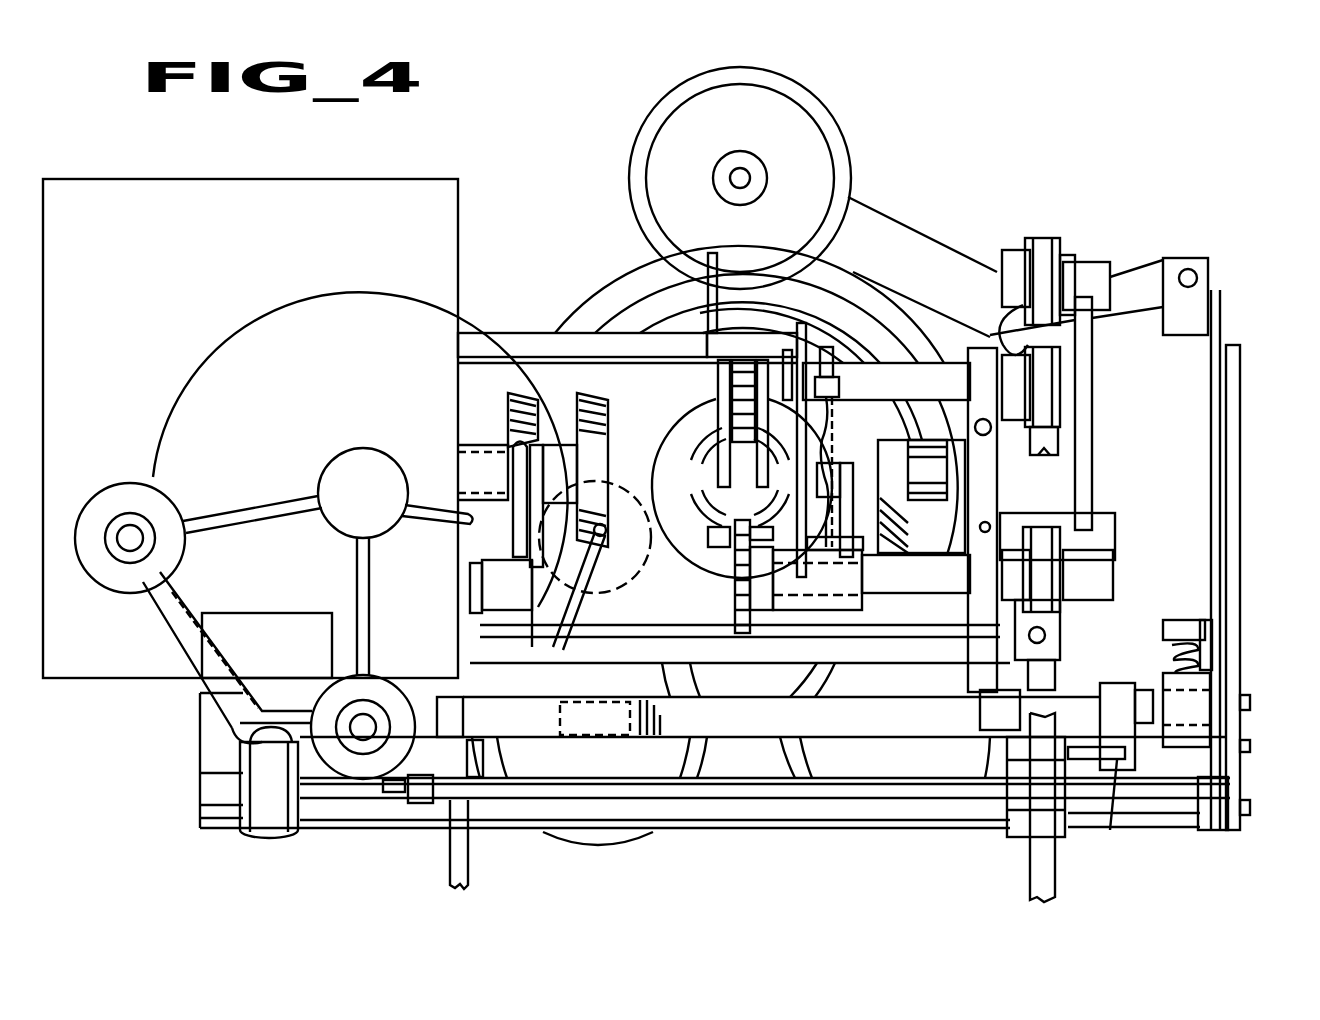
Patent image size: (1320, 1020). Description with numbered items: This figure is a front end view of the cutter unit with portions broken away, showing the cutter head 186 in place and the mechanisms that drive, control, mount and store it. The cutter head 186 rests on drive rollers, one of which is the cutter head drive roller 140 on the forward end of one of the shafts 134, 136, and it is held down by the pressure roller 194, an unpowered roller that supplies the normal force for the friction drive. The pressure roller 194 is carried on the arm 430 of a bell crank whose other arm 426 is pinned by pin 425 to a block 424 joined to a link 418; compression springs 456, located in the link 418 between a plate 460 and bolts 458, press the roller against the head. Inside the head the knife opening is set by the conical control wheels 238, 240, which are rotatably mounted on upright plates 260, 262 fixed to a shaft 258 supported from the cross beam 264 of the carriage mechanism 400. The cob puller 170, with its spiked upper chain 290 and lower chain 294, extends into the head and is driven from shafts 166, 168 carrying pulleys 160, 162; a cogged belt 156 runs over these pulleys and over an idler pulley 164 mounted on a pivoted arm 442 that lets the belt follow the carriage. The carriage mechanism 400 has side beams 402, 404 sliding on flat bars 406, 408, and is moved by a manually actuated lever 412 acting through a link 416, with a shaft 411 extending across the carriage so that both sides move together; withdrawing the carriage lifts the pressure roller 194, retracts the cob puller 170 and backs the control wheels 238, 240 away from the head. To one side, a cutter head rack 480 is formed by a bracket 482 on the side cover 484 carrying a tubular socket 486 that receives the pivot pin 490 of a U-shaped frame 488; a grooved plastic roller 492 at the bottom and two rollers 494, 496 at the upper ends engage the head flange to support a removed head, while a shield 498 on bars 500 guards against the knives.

The shaft 134 is at (587, 741).
The shaft 136 is at (897, 736).
The cutter head drive roller 140 is at (897, 838).
The cogged belt 156 is at (1058, 440).
The pulley 160 is at (1050, 588).
The pulley 162 is at (1063, 372).
The idler pulley 164 is at (1070, 215).
The shaft 166 is at (942, 590).
The shaft 168 is at (962, 398).
The cob puller 170 is at (848, 352).
The cutter head 186 is at (318, 297).
The pressure roller 194 is at (803, 97).
The conical control wheel 238 is at (607, 396).
The conical control wheel 240 is at (905, 480).
The shaft 258 is at (710, 657).
The upright plate 260 is at (555, 692).
The upright plate 262 is at (810, 692).
The cross beam 264 is at (780, 733).
The upper chain 290 is at (702, 415).
The lower chain 294 is at (762, 632).
The carriage mechanism 400 is at (1068, 688).
The side beam 402 is at (400, 793).
The side beam 404 is at (1120, 750).
The flat bar 406 is at (425, 805).
The flat bar 408 is at (1113, 800).
The shaft 411 is at (678, 830).
The manually actuated lever 412 is at (1233, 345).
The link 416 is at (1228, 728).
The link 418 is at (1211, 507).
The block 424 is at (1163, 322).
The pin 425 is at (1195, 268).
The arm 426 is at (1140, 270).
The arm 430 is at (880, 213).
The arm 442 is at (1092, 412).
The compression spring 456 is at (1210, 688).
The bolt 458 is at (1180, 640).
The plate 460 is at (1205, 630).
The cutter head rack 480 is at (106, 482).
The bracket 482 is at (232, 622).
The side cover 484 is at (140, 226).
The tubular socket 486 is at (240, 775).
The U-shaped frame 488 is at (172, 641).
The pivot pin 490 is at (222, 723).
The grooved plastic roller 492 is at (385, 676).
The roller 494 is at (102, 570).
The roller 496 is at (642, 552).
The shield 498 is at (360, 458).
The bar 500 is at (390, 557).